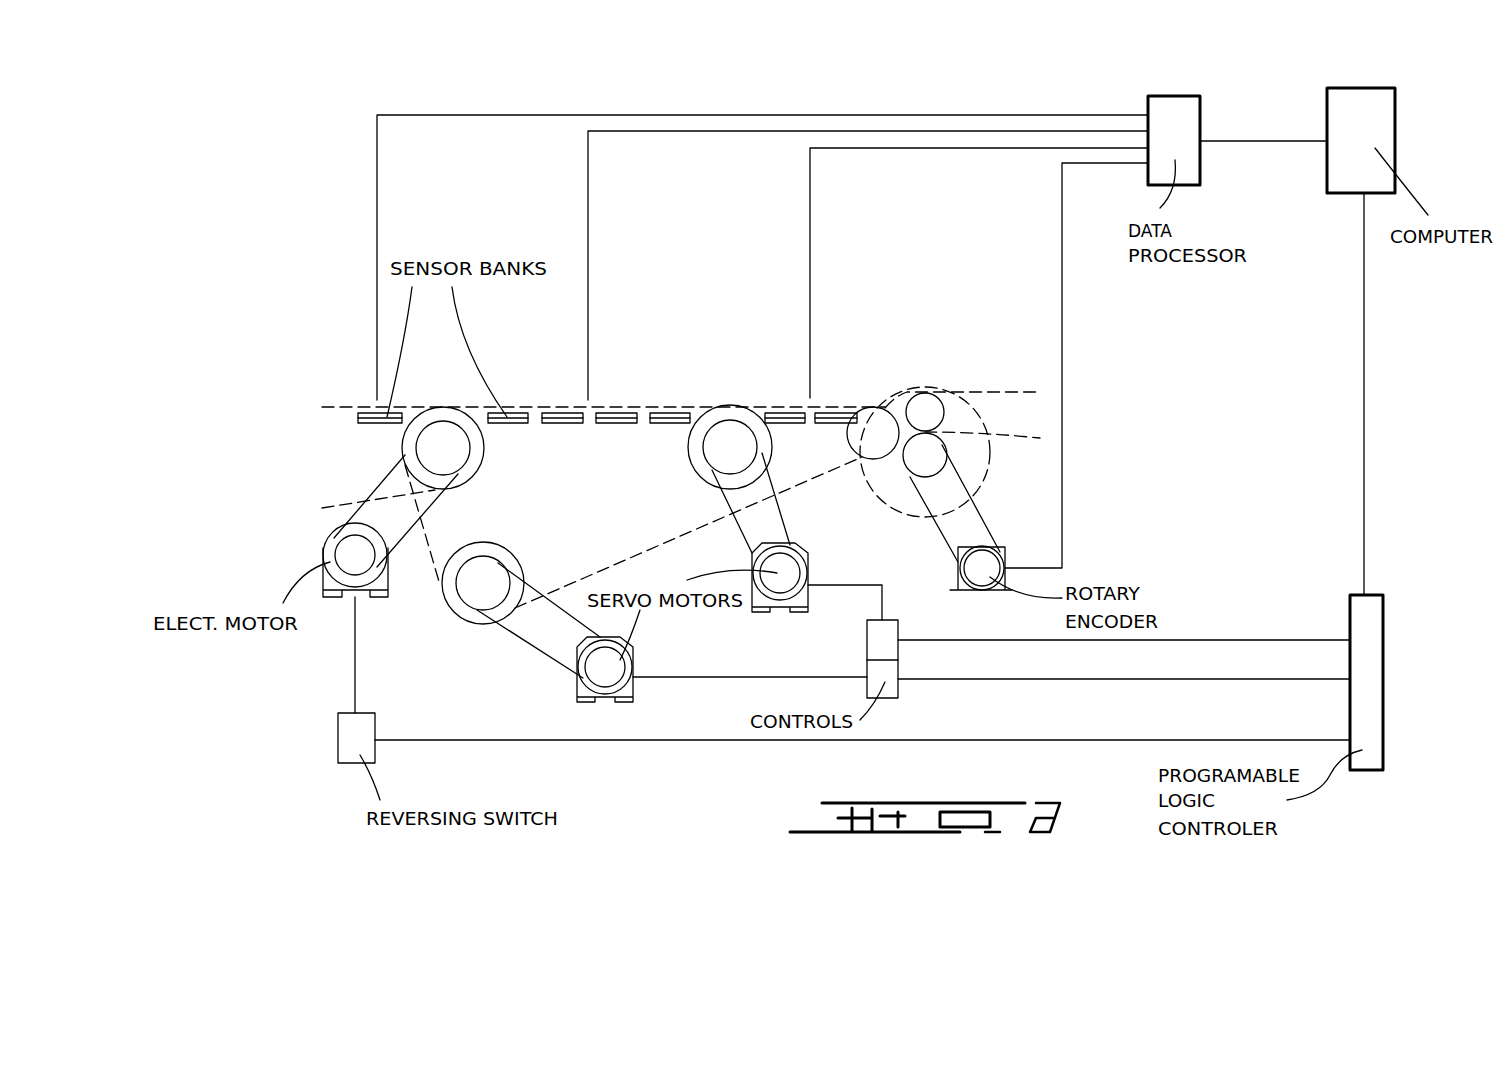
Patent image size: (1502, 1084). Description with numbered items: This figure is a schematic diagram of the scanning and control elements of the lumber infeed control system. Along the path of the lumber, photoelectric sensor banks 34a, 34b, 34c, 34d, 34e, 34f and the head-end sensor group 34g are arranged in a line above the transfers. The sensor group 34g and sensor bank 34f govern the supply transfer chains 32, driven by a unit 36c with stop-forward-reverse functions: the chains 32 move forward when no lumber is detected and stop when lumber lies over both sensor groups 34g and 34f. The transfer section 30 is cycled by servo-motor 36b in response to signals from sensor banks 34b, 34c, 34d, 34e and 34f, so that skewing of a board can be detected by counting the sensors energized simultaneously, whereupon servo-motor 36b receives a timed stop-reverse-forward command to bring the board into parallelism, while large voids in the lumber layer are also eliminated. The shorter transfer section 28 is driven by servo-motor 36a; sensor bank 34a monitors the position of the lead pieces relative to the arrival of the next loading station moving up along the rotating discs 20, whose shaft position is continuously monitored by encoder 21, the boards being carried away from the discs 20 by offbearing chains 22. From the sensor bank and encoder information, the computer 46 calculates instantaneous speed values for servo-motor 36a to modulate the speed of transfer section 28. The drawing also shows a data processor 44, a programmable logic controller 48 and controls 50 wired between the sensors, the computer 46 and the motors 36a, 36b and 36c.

The rotating discs 20 is at (895, 400).
The encoder 21 is at (990, 563).
The offbearing chains 22 is at (1017, 392).
The transfer section 28 is at (845, 395).
The transfer section 30 is at (690, 390).
The supply transfer chains 32 is at (339, 395).
The sensor bank 34a is at (828, 415).
The sensor bank 34b is at (787, 415).
The sensor bank 34c is at (668, 424).
The sensor bank 34d is at (612, 424).
The sensor bank 34e is at (563, 413).
The sensor bank 34f is at (507, 413).
The sensor group 34g is at (385, 420).
The servo-motor 36a is at (618, 683).
The servo-motor 36b is at (780, 583).
The drive unit 36c is at (388, 580).
The data processor 44 is at (1168, 112).
The computer 46 is at (1345, 118).
The programmable logic controller 48 is at (1360, 628).
The controls 50 is at (868, 650).